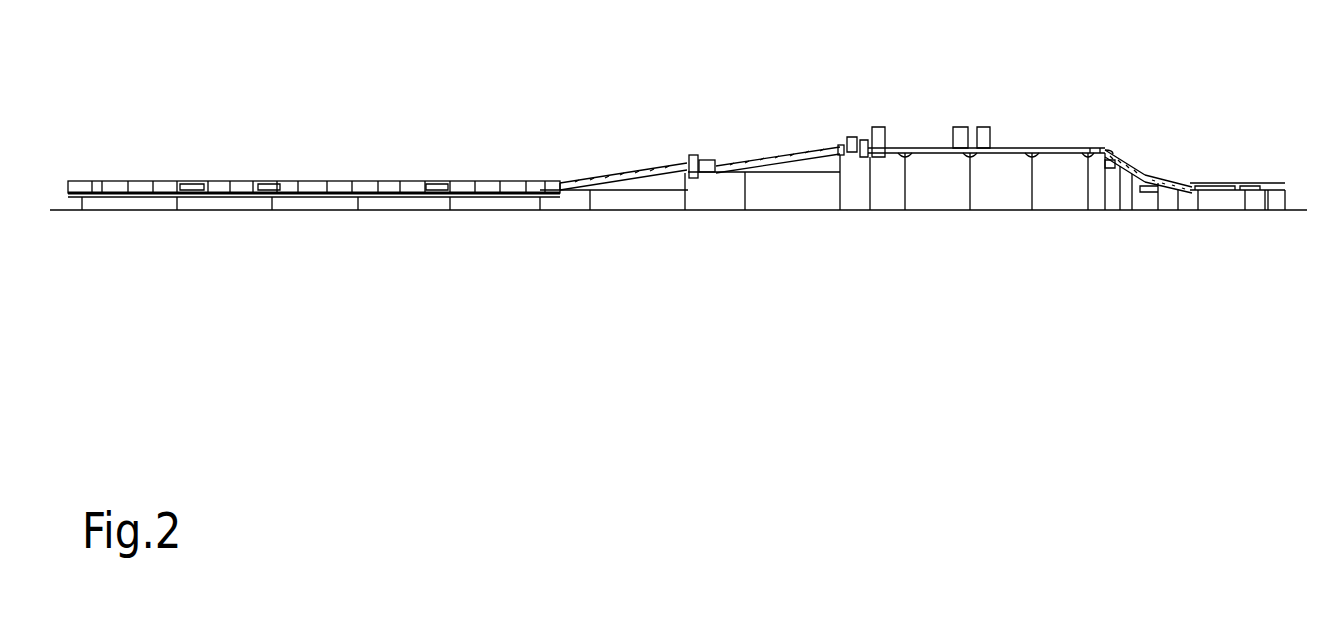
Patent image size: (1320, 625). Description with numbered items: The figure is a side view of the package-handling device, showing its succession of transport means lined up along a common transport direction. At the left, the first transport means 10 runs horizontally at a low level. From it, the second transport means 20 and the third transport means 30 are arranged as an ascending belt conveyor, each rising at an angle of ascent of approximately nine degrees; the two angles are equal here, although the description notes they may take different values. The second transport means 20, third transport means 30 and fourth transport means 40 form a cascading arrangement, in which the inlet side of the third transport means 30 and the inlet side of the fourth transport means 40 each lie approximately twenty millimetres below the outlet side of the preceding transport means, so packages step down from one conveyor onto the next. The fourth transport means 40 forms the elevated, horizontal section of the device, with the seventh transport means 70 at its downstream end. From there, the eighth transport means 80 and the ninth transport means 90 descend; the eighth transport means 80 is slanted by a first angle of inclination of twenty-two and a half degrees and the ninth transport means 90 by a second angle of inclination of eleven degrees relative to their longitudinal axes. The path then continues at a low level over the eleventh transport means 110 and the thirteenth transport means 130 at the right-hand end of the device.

The first transport means 10 is at (362, 180).
The second transport means 20 is at (630, 165).
The third transport means 30 is at (792, 150).
The fourth transport means 40 is at (930, 148).
The seventh transport means 70 is at (1080, 148).
The eighth transport means 80 is at (1133, 170).
The ninth transport means 90 is at (1172, 178).
The eleventh transport means 110 is at (1240, 182).
The thirteenth transport means 130 is at (1270, 210).